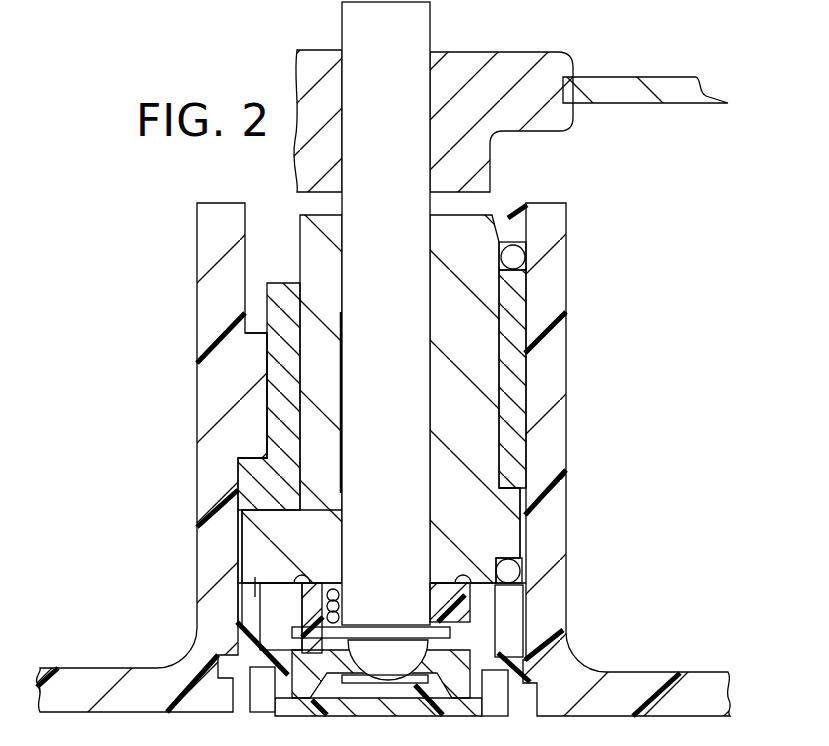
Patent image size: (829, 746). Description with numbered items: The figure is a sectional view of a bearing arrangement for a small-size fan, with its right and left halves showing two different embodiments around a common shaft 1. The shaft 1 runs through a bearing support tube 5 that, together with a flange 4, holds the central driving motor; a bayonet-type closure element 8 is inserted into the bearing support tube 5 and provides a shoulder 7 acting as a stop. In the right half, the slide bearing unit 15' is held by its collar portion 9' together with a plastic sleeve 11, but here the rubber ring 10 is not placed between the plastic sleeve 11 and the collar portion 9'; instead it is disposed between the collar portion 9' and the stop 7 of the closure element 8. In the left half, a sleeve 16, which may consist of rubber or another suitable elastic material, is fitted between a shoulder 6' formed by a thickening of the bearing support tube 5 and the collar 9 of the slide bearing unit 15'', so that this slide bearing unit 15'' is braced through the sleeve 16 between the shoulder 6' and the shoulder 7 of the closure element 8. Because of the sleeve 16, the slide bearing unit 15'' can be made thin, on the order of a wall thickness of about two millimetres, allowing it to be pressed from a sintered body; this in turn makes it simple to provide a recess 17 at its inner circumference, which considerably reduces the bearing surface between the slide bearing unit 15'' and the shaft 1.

The shaft 1 is at (412, 32).
The flange 4 is at (80, 700).
The bearing support tube 5 is at (212, 572).
The shoulder 6' is at (210, 395).
The shoulder 7 is at (255, 583).
The bayonet-type closure element 8 is at (392, 700).
The collar 9 is at (252, 568).
The collar portion 9' is at (547, 519).
The rubber ring 10 is at (513, 257).
The plastic sleeve 11 is at (500, 403).
The slide bearing unit 15' is at (542, 379).
The slide bearing unit 15'' is at (341, 362).
The sleeve 16 is at (268, 297).
The recess 17 is at (343, 433).